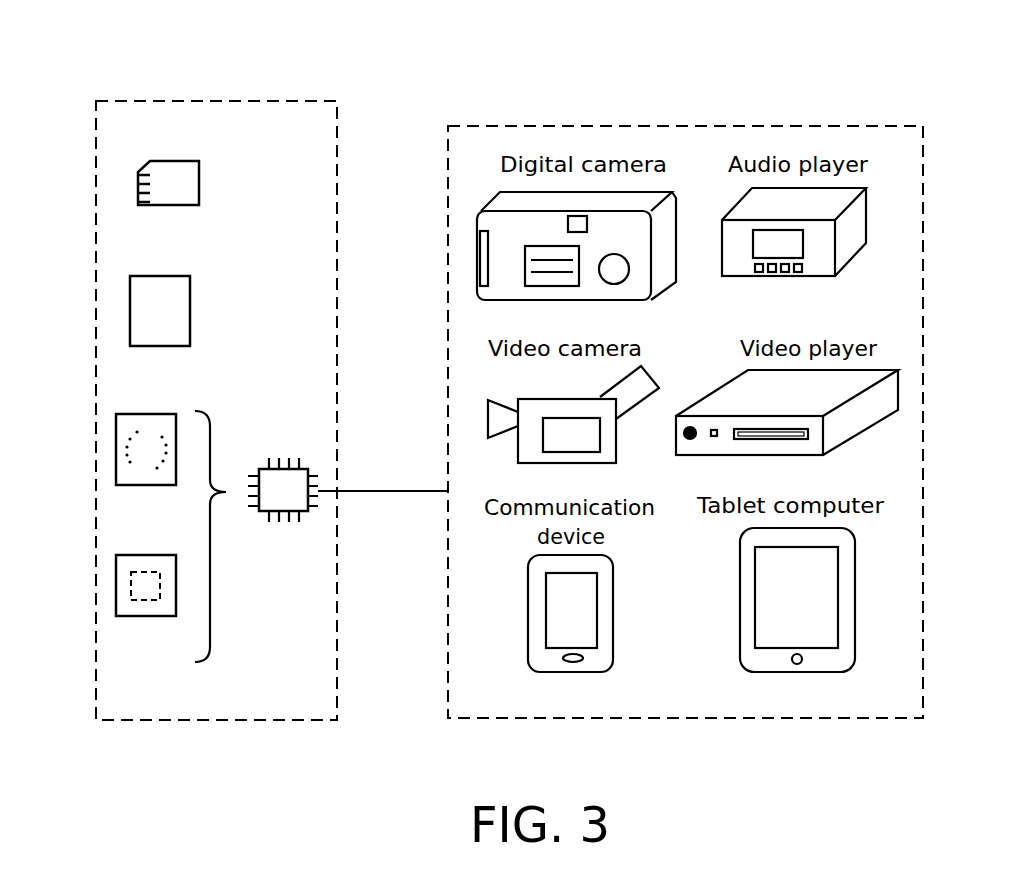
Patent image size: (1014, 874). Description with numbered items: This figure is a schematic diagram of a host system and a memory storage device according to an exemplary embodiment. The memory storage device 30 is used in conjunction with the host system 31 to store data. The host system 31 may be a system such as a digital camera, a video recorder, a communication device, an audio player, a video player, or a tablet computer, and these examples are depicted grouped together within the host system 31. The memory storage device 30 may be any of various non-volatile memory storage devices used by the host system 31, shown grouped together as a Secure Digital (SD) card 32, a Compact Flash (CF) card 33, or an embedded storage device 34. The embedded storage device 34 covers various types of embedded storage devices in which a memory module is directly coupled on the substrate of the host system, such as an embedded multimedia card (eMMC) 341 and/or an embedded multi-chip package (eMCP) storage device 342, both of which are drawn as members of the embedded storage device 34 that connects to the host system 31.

The memory storage device 30 is at (205, 100).
The host system 31 is at (610, 125).
The Secure Digital (SD) card 32 is at (138, 190).
The Compact Flash (CF) card 33 is at (130, 312).
The embedded storage device 34 is at (289, 466).
The embedded multimedia card (eMMC) 341 is at (116, 451).
The embedded multi-chip package (eMCP) storage device 342 is at (116, 588).